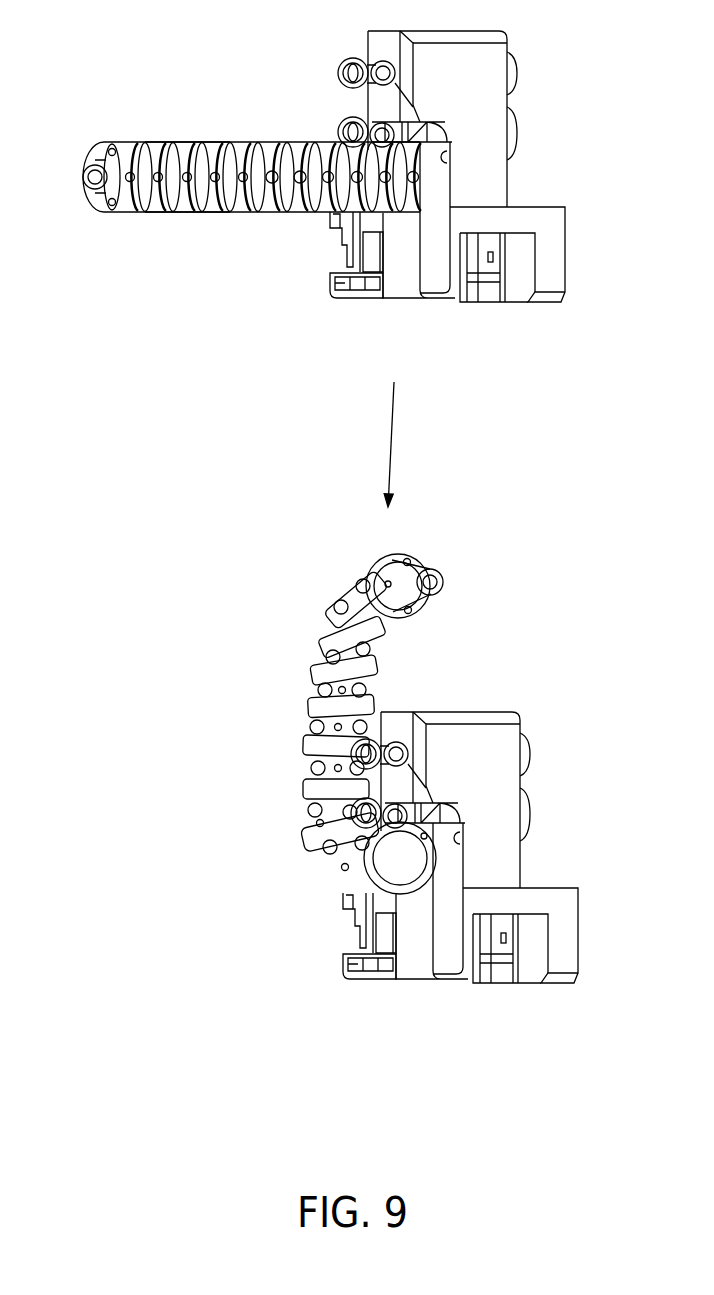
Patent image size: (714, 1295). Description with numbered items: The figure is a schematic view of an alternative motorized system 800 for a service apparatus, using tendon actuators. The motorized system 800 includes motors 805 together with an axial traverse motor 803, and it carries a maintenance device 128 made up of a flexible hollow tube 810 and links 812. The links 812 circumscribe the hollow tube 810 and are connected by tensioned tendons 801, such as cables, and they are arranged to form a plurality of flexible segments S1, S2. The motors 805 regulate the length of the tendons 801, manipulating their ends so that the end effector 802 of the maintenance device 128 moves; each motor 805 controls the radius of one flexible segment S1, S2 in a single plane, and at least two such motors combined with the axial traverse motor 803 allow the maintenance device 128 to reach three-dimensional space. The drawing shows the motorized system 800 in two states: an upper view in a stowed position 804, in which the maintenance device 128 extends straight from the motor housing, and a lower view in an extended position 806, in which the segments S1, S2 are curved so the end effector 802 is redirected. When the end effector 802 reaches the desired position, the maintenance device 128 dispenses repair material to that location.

The motorized system 800 is at (282, 52).
The tendons 801 is at (250, 501).
The end effector 802 is at (86, 138).
The maintenance device 128 is at (240, 143).
The flexible hollow tube 810 is at (110, 182).
The stowed position 804 is at (177, 252).
The links 812 is at (212, 214).
The motors 805 is at (514, 136).
The axial traverse motor 803 is at (339, 326).
The extended position 806 is at (188, 675).
The flexible segment S1 is at (298, 700).
The flexible segment S2 is at (298, 554).